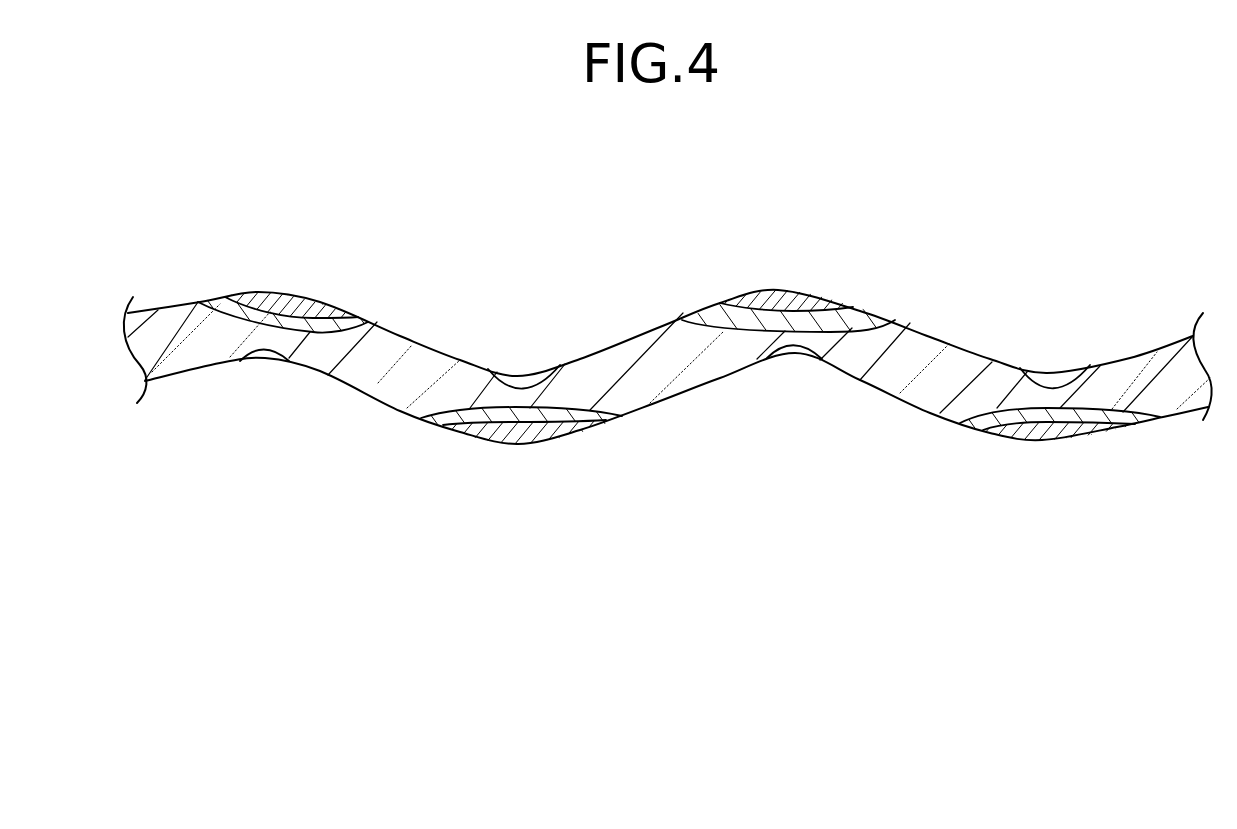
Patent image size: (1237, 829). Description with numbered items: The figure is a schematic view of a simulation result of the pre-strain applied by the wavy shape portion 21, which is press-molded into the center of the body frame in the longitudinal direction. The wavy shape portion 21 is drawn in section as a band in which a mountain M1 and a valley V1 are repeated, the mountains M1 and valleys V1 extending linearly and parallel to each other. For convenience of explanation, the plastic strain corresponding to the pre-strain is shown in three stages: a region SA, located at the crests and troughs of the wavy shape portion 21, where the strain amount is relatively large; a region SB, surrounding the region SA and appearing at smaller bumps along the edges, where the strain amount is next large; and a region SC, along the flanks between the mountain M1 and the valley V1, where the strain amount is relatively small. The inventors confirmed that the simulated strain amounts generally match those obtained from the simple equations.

The wavy shape portion 21 is at (1028, 160).
The region SA is at (287, 300).
The region SB is at (352, 320).
The region SC is at (171, 320).
The mountain M1 is at (250, 277).
The valley V1 is at (474, 455).